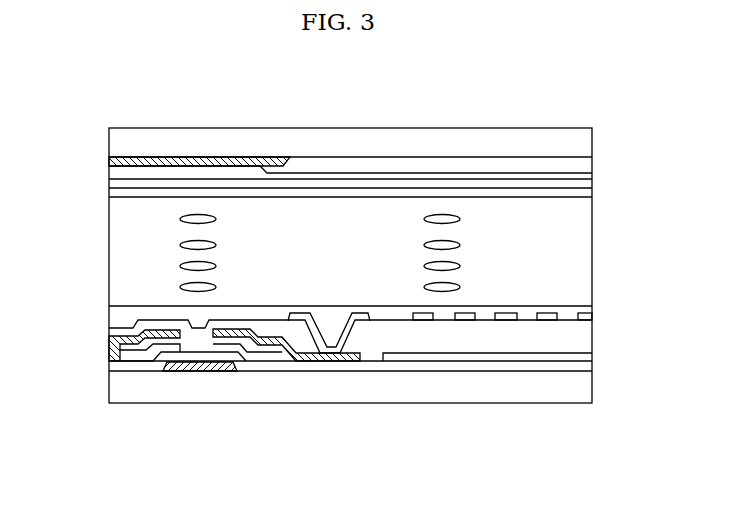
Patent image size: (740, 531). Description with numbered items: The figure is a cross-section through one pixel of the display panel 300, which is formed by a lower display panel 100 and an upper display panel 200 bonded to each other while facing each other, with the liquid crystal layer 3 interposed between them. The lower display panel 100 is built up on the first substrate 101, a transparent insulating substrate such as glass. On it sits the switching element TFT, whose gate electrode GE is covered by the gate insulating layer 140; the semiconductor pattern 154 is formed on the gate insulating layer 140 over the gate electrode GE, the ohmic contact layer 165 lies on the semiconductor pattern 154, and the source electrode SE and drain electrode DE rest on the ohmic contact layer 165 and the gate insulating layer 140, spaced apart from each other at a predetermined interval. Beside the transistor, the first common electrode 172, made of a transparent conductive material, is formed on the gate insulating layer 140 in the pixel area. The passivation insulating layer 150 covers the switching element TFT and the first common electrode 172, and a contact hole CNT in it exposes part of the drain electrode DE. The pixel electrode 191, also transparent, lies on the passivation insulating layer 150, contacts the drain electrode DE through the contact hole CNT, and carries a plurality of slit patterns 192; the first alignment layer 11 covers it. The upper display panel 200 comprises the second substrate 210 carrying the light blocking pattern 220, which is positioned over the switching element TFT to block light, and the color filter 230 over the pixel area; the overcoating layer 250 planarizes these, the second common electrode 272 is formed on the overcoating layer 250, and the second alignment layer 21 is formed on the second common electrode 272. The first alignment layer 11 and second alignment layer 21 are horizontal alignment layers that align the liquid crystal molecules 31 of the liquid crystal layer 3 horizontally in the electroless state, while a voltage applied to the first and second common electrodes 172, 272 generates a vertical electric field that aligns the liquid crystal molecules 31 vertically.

The display panel 300 is at (320, 99).
The second substrate 210 is at (109, 139).
The light blocking pattern 220 is at (109, 164).
The overcoating layer 250 is at (109, 176).
The second common electrode 272 is at (109, 186).
The second alignment layer 21 is at (109, 199).
The color filter 230 is at (458, 166).
The upper display panel 200 is at (599, 129).
The liquid crystal layer 3 is at (599, 198).
The liquid crystal molecules 31 is at (461, 219).
The first alignment layer 11 is at (109, 322).
The contact hole CNT is at (332, 313).
The pixel electrode 191 is at (510, 321).
The slit patterns 192 is at (576, 315).
The passivation insulating layer 150 is at (480, 340).
The first common electrode 172 is at (448, 358).
The gate insulating layer 140 is at (405, 365).
The first substrate 101 is at (109, 385).
The lower display panel 100 is at (599, 307).
The gate electrode GE is at (203, 371).
The semiconductor pattern 154 is at (262, 360).
The ohmic contact layer 165 is at (266, 350).
The source electrode SE is at (170, 330).
The drain electrode DE is at (230, 338).
The switching element TFT is at (330, 452).